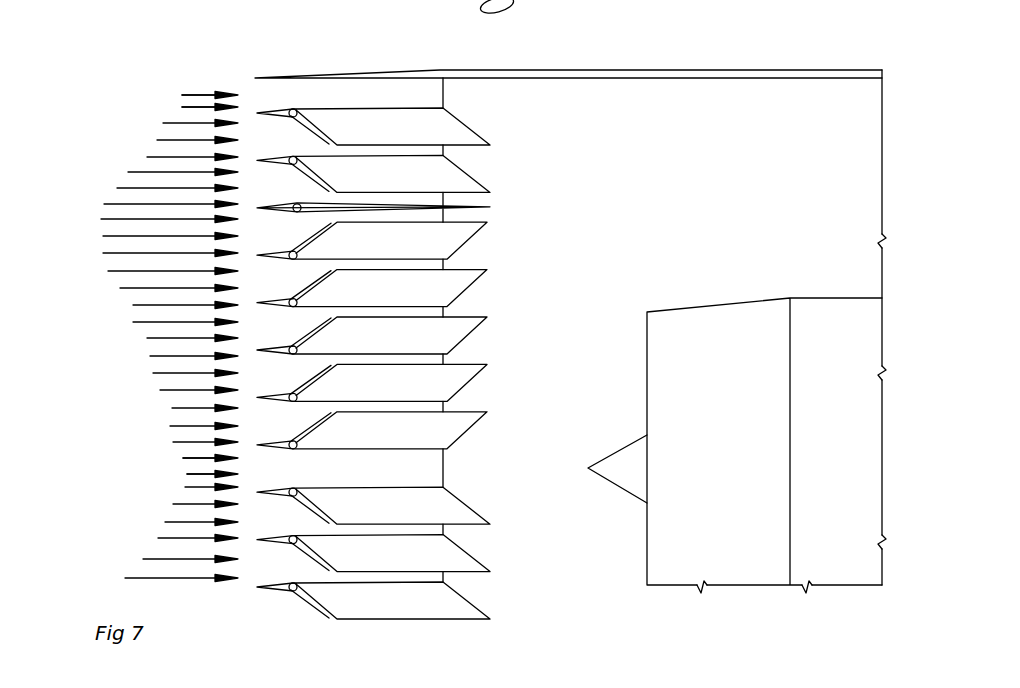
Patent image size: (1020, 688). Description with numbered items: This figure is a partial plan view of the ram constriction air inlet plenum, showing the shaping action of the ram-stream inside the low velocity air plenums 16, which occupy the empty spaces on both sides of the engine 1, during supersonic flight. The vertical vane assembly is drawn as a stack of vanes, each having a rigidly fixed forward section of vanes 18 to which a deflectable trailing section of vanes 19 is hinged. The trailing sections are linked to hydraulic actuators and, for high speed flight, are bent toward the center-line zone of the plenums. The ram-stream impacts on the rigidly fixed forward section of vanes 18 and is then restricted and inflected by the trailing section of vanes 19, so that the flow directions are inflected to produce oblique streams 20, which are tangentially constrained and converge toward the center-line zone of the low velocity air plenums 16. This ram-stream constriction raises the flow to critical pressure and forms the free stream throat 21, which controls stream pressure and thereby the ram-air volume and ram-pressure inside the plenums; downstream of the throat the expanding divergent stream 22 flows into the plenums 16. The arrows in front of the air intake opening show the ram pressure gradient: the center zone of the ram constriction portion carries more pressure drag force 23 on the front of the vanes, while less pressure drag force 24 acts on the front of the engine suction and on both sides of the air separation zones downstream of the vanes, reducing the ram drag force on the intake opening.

The engine 1 is at (735, 445).
The low velocity air plenums 16 is at (849, 327).
The rigidly fixed forward section of vanes 18 is at (276, 108).
The deflectable trailing section of vanes 19 is at (318, 128).
The oblique streams 20 is at (416, 318).
The free stream throat 21 is at (568, 155).
The divergent stream 22 is at (822, 143).
The pressure drag force 23 is at (147, 337).
The pressure drag force 24 is at (177, 282).